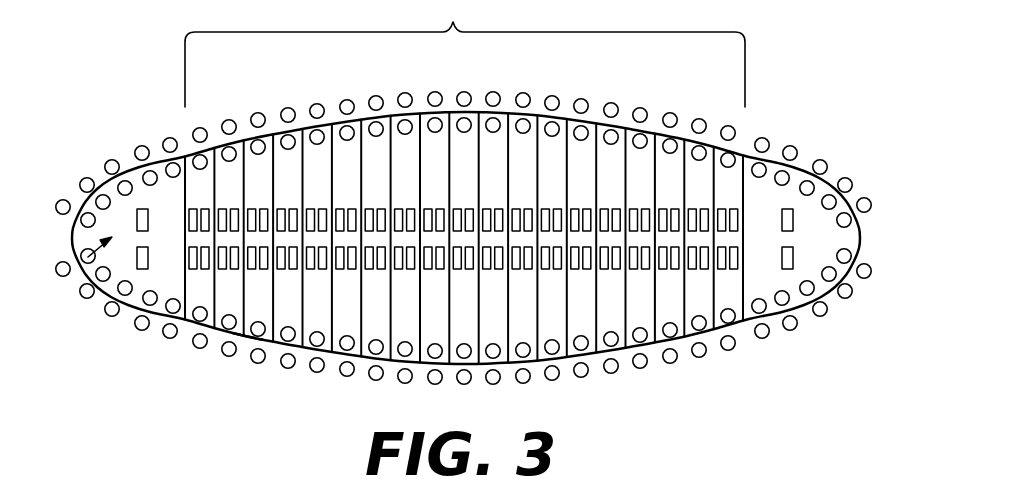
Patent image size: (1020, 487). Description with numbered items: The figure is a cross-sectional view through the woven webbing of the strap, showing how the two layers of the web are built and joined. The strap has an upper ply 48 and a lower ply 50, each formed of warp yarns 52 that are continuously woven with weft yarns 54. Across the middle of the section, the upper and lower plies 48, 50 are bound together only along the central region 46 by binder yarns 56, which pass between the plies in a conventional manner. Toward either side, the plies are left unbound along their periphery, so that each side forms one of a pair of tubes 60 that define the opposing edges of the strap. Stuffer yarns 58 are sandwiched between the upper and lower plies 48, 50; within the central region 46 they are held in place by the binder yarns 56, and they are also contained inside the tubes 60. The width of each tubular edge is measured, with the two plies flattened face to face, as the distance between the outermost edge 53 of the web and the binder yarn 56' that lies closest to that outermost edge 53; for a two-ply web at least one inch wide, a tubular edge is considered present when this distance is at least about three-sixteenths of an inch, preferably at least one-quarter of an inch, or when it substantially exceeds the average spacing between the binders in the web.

The central region 46 is at (465, 53).
The upper ply 48 is at (818, 133).
The lower ply 50 is at (811, 332).
The warp yarns 52 is at (110, 315).
The outermost edge 53 is at (73, 230).
The weft yarns 54 is at (278, 349).
The binder yarns 56 is at (463, 214).
The binder yarn closest to the outermost edge 56' is at (494, 202).
The stuffer yarns 58 is at (143, 208).
The tubes 60 is at (82, 262).